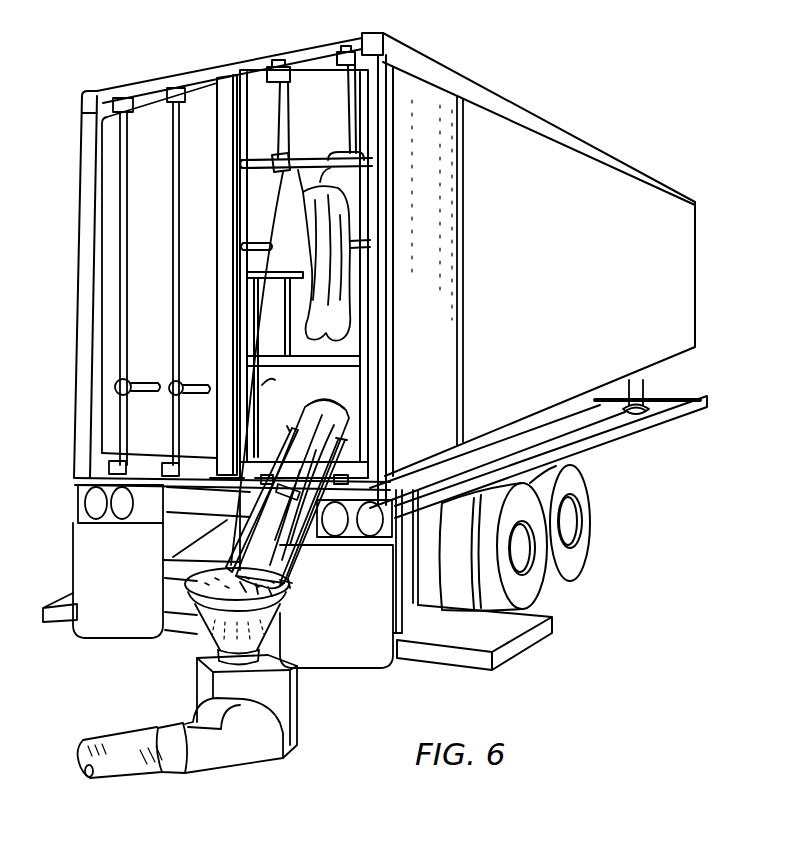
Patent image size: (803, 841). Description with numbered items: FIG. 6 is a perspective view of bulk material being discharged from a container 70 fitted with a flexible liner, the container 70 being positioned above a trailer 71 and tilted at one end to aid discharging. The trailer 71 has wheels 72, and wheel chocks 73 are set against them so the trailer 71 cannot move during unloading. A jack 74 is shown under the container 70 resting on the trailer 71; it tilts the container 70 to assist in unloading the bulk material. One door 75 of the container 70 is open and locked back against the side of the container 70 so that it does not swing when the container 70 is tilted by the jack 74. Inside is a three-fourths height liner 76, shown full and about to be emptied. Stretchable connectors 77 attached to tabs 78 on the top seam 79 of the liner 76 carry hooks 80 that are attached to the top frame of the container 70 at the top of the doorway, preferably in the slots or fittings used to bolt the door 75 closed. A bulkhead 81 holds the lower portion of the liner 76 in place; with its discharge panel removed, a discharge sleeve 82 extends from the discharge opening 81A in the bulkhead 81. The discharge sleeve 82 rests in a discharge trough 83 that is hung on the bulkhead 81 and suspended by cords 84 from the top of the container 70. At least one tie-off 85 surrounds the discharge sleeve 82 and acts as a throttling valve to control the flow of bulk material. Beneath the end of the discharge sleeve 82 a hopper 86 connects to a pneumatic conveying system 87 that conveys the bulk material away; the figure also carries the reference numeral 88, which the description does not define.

The container 70 is at (632, 190).
The trailer 71 is at (617, 432).
The wheels 72 is at (590, 519).
The wheel chocks 73 is at (515, 645).
The jack 74 is at (648, 383).
The door 75 is at (457, 90).
The liner 76 is at (247, 247).
The stretchable connectors 77 is at (350, 125).
The tabs 78 is at (330, 170).
The top seam 79 is at (368, 165).
The hooks 80 is at (343, 50).
The bulkhead 81 is at (277, 311).
The discharge opening 81A is at (323, 379).
The discharge sleeve 82 is at (346, 434).
The discharge trough 83 is at (303, 562).
The cords 84 is at (266, 384).
The tie-off 85 is at (306, 537).
The hopper 86 is at (282, 617).
The pneumatic conveying system 87 is at (252, 753).
The lower bar 88 is at (368, 247).